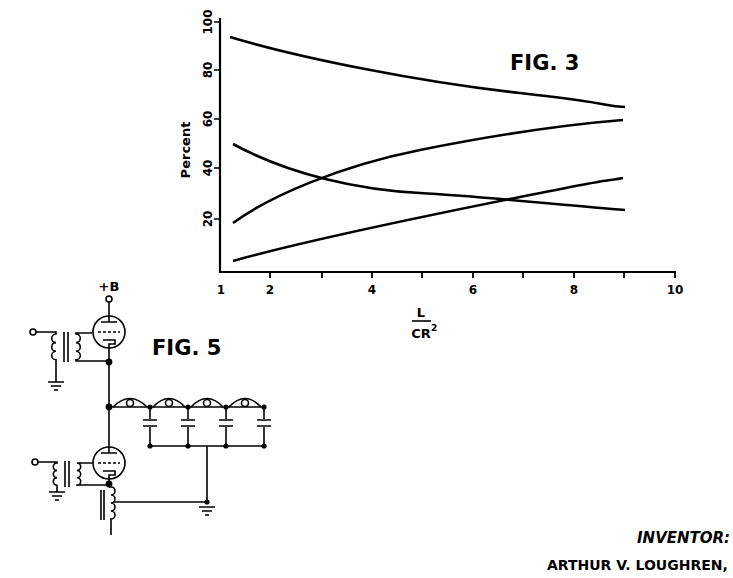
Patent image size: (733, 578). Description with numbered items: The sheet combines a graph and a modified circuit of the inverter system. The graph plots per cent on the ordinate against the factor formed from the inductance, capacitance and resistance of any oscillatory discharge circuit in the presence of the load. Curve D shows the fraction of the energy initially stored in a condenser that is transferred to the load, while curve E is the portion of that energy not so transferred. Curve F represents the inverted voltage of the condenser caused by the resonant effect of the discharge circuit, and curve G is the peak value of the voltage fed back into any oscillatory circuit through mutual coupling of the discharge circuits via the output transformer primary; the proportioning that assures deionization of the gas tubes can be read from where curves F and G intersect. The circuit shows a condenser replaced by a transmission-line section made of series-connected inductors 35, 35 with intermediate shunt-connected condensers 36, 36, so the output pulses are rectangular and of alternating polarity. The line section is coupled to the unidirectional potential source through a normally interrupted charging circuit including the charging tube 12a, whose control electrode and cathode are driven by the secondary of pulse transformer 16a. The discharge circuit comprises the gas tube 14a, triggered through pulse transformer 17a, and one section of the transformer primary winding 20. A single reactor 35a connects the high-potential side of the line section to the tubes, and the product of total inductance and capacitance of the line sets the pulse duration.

In FIG. 5, the charging tube 12a is at (119, 323).
In FIG. 5, the gas tube 14a is at (125, 467).
In FIG. 5, the pulse transformer 16a is at (66, 328).
In FIG. 5, the pulse transformer 17a is at (66, 458).
In FIG. 5, the section of the transformer primary winding 20 is at (108, 523).
In FIG. 5, the series-connected inductors 35 is at (244, 400).
In FIG. 5, the reactor 35a is at (131, 400).
In FIG. 5, the shunt-connected condensers 36 is at (226, 422).
In FIG. 3, the curve D is at (609, 108).
In FIG. 3, the curve E is at (606, 181).
In FIG. 3, the curve F is at (605, 124).
In FIG. 3, the curve G is at (606, 214).